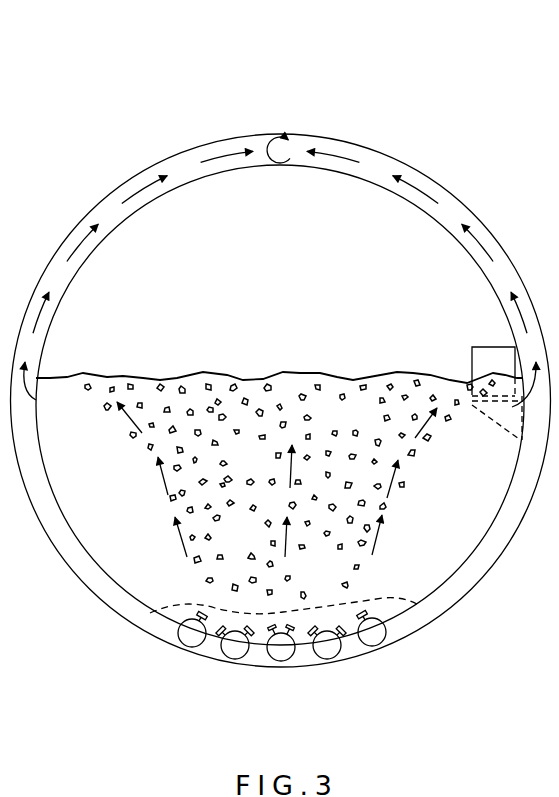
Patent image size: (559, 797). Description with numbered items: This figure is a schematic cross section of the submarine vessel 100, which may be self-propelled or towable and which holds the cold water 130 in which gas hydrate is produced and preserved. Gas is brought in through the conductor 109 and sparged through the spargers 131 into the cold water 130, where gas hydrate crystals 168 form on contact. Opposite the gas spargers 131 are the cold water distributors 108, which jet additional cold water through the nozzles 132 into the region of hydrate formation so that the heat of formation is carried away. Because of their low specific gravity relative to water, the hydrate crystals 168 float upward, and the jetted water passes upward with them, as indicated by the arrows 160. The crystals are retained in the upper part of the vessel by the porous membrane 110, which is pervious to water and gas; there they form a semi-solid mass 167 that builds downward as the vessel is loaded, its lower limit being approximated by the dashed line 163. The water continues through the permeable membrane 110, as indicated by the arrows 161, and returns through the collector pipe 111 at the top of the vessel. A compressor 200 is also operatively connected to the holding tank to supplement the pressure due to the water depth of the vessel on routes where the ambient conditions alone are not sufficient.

The submarine vessel 100 is at (457, 198).
The porous membrane 110 is at (120, 225).
The collector pipe 111 is at (288, 146).
The arrows indicating water flow through permeable membrane 161 is at (217, 153).
The semi-solid mass 167 is at (297, 274).
The cold water 130 is at (477, 507).
The compressor 200 is at (484, 348).
The hydrate crystals 168 is at (311, 417).
The arrows indicating upward water flow 160 is at (165, 484).
The cold water distributor 108 is at (188, 640).
The conductor 109 is at (233, 650).
The sparger 131 is at (246, 627).
The nozzle 132 is at (363, 617).
The dashed line 163 is at (322, 606).